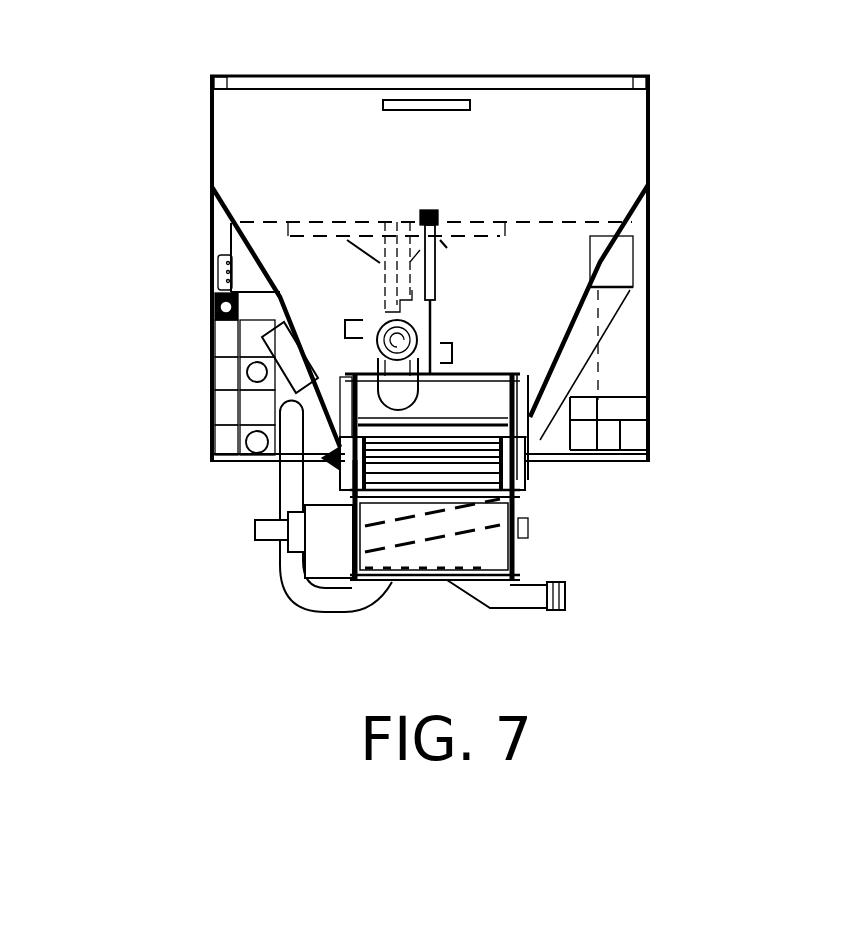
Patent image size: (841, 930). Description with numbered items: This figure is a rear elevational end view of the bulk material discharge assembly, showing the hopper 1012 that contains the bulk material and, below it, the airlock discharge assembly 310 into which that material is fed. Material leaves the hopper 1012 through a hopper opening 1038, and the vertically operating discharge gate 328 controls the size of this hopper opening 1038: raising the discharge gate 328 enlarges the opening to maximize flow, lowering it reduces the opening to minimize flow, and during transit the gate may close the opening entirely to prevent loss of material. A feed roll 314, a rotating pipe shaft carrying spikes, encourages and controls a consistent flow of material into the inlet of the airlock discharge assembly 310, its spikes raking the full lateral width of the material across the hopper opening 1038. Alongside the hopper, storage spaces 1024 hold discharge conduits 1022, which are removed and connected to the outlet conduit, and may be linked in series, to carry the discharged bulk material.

The hopper 1012 is at (516, 248).
The discharge gate 328 is at (449, 367).
The discharge conduit 1022 is at (243, 377).
The storage spaces 1024 is at (222, 444).
The hopper opening 1038 is at (480, 440).
The feed roll 314 is at (540, 480).
The airlock discharge assembly 310 is at (538, 539).